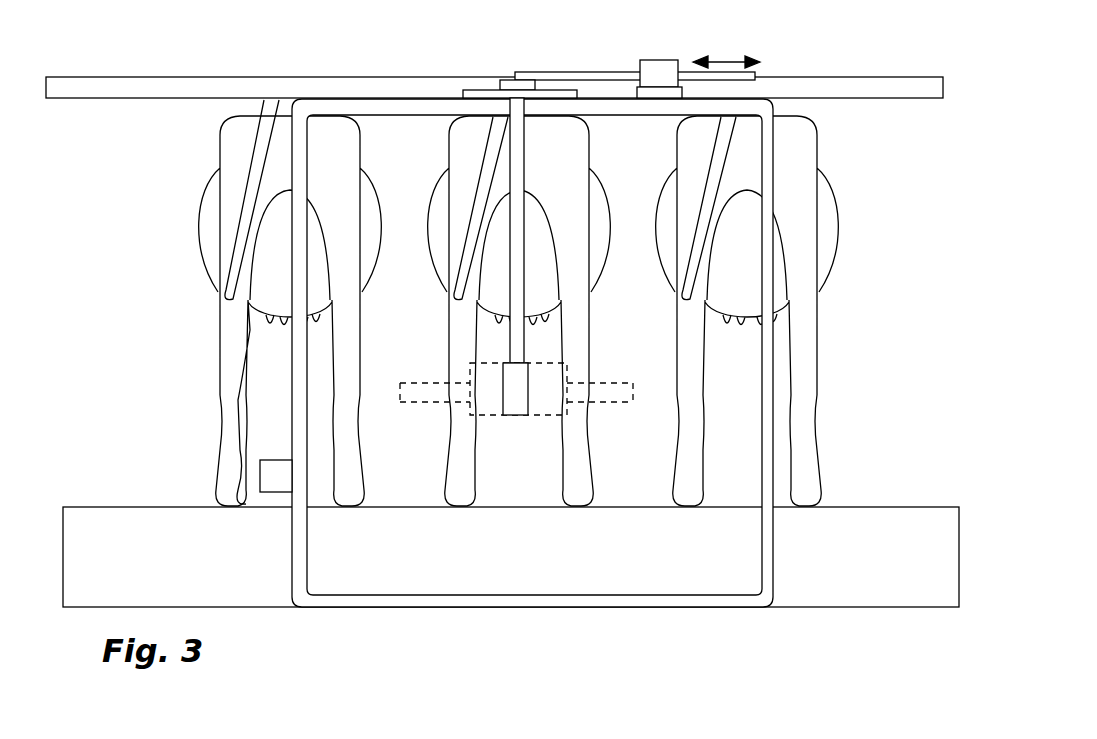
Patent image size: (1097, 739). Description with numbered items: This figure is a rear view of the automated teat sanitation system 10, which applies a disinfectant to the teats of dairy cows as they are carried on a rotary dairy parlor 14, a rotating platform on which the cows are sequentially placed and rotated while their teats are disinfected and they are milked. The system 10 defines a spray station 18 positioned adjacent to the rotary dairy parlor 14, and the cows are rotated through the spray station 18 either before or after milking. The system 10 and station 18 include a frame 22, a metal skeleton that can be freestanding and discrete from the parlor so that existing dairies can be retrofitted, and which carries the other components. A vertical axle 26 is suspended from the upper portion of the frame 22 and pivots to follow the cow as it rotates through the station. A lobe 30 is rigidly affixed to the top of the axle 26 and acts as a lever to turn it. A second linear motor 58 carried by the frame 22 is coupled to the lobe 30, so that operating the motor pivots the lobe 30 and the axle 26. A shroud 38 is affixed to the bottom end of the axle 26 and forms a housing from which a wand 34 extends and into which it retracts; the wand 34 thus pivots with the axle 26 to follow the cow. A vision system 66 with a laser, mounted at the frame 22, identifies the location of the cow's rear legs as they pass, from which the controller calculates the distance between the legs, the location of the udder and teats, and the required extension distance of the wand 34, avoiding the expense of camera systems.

The system 10 is at (284, 354).
The rotary dairy parlor 14 is at (917, 525).
The spray station 18 is at (763, 238).
The frame 22 is at (773, 165).
The vertical axle 26 is at (510, 172).
The lobe 30 is at (507, 80).
The wand 34 is at (600, 395).
The shroud 38 is at (517, 398).
The second linear motor 58 is at (663, 60).
The vision system 66 is at (262, 470).